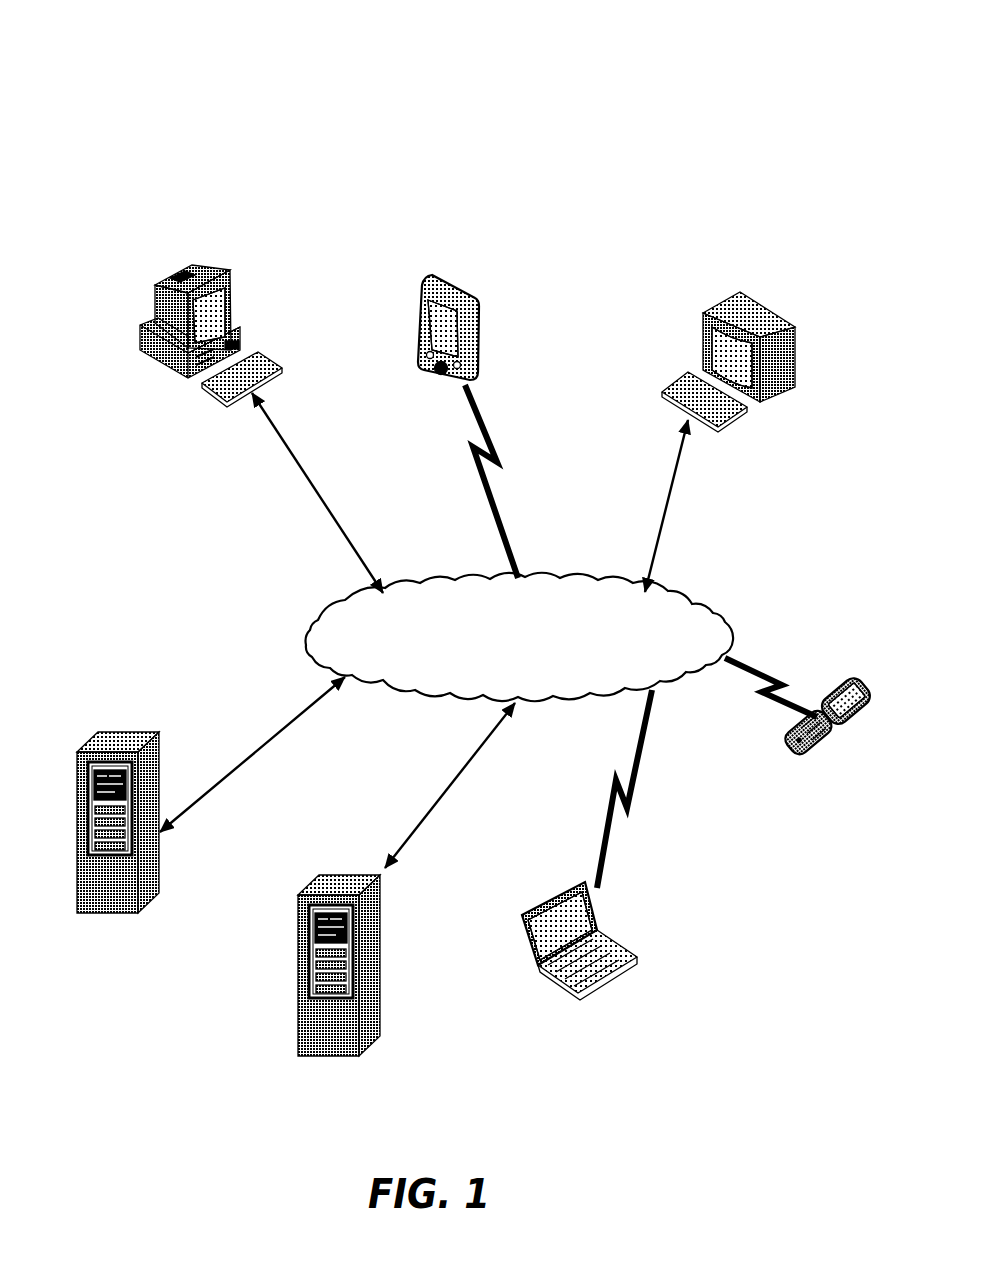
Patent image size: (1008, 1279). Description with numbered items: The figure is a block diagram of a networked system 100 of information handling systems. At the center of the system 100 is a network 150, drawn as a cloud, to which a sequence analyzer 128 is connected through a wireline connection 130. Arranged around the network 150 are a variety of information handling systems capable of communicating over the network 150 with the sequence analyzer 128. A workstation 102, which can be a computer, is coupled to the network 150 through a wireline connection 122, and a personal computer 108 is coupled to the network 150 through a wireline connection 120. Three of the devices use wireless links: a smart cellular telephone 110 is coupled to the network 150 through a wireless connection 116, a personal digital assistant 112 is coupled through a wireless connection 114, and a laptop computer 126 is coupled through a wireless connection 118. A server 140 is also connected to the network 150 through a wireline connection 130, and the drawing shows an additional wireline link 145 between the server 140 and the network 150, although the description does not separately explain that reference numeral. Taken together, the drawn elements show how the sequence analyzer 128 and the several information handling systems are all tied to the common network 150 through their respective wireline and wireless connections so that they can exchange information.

The networked system 100 is at (112, 90).
The workstation 102 is at (768, 310).
The personal computer 108 is at (228, 270).
The smart cellular telephone 110 is at (838, 688).
The personal digital assistant 112 is at (465, 293).
The wireless connection 114 is at (505, 525).
The wireless connection 116 is at (755, 678).
The wireless connection 118 is at (632, 760).
The wireline connection 120 is at (320, 490).
The wireline connection 122 is at (660, 522).
The laptop computer 126 is at (618, 938).
The sequence analyzer 128 is at (382, 993).
The wireline connection 130 is at (466, 761).
The server 140 is at (160, 872).
The network connection 145 is at (279, 732).
The network 150 is at (720, 617).